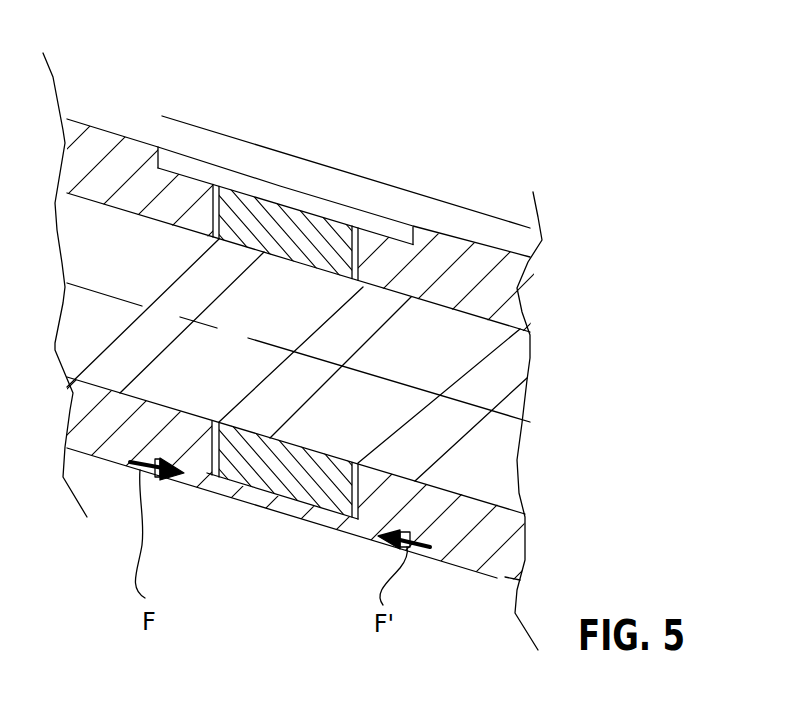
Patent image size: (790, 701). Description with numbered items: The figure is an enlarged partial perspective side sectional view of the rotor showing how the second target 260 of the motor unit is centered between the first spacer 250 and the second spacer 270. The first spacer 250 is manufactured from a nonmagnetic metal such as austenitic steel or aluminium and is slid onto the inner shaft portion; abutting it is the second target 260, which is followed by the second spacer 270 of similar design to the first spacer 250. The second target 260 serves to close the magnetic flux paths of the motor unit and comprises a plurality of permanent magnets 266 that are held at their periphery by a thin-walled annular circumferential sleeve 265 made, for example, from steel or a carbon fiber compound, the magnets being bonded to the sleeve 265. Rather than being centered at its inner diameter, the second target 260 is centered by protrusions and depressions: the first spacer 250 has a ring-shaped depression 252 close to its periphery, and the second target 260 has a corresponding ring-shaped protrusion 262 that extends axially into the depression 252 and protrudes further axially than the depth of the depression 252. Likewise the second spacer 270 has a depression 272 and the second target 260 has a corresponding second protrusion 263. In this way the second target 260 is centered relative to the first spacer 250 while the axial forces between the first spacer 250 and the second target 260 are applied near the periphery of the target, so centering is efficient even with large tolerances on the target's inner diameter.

The first spacer 250 is at (102, 452).
The ring-shaped depression 252 is at (177, 185).
The second target 260 is at (250, 546).
The ring-shaped protrusion 262 is at (208, 168).
The second protrusion 263 is at (384, 226).
The sleeve 265 is at (373, 196).
The permanent magnets 266 is at (281, 212).
The second spacer 270 is at (453, 540).
The depression 272 is at (390, 237).